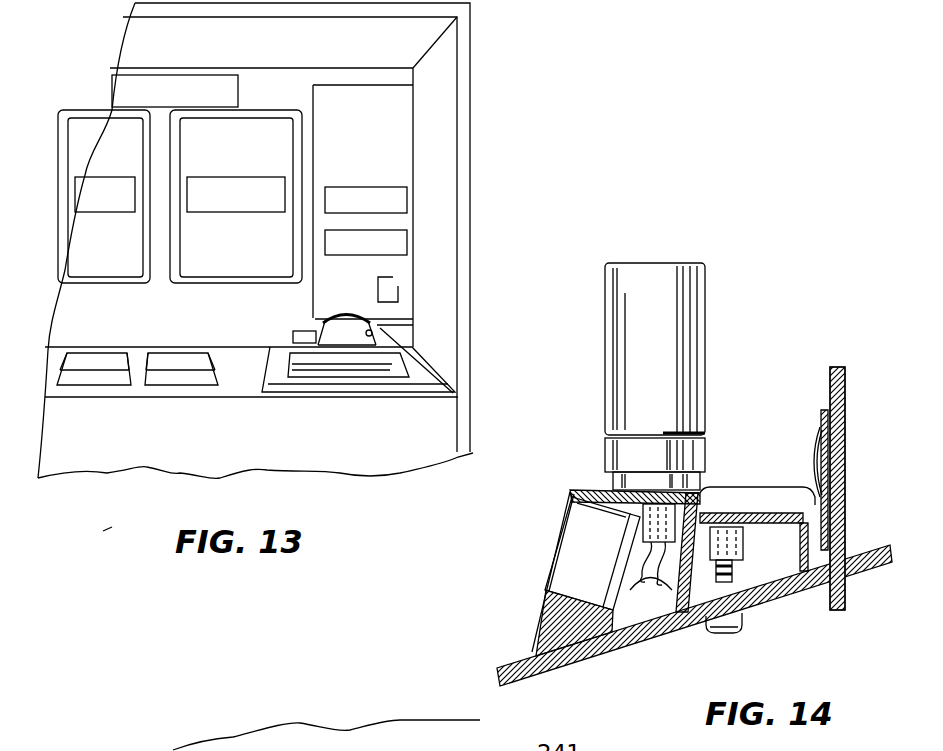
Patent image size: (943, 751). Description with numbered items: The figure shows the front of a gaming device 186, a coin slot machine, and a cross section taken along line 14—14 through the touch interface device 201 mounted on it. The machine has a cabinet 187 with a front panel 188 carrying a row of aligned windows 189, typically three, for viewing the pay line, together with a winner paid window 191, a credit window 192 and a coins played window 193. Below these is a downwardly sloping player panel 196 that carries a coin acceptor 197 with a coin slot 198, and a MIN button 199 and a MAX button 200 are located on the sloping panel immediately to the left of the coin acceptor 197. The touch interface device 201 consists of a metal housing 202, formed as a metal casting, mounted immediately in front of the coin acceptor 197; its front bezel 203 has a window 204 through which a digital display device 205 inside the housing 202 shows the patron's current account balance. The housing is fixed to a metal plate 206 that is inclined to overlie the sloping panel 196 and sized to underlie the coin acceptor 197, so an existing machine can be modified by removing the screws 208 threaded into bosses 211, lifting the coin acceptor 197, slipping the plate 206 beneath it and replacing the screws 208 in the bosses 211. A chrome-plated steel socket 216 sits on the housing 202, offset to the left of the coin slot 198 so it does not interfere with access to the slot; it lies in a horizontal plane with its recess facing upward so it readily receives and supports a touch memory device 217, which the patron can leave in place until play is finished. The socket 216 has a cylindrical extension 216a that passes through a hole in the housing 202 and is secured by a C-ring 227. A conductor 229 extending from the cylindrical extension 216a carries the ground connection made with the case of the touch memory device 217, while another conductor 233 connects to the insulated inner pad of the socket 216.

In FIG. 13, the section line 14 is at (355, 303).
In FIG. 13, the gaming device 186 is at (494, 104).
In FIG. 13, the cabinet 187 is at (473, 72).
In FIG. 14, the cabinet 187 is at (830, 377).
In FIG. 13, the front panel 188 is at (262, 80).
In FIG. 13, the aligned windows 189 is at (103, 183).
In FIG. 13, the winner paid window 191 is at (362, 195).
In FIG. 13, the credit window 192 is at (405, 240).
In FIG. 13, the coins played window 193 is at (397, 284).
In FIG. 13, the downwardly sloping player panel 196 is at (62, 395).
In FIG. 14, the downwardly sloping player panel 196 is at (610, 650).
In FIG. 13, the coin acceptor 197 is at (413, 320).
In FIG. 14, the coin acceptor 197 is at (824, 412).
In FIG. 13, the slot 198 is at (385, 330).
In FIG. 14, the slot 198 is at (817, 440).
In FIG. 13, the MIN button 199 is at (93, 363).
In FIG. 13, the MAX button 200 is at (178, 363).
In FIG. 13, the touch interface device 201 is at (263, 358).
In FIG. 14, the metal housing 202 is at (541, 629).
In FIG. 13, the front bezel 203 is at (398, 376).
In FIG. 14, the front bezel 203 is at (558, 597).
In FIG. 13, the window 204 is at (293, 370).
In FIG. 14, the window 204 is at (561, 545).
In FIG. 14, the digital display device 205 is at (584, 537).
In FIG. 13, the metal plate 206 is at (455, 392).
In FIG. 14, the metal plate 206 is at (553, 672).
In FIG. 14, the screws 208 is at (745, 625).
In FIG. 14, the bosses 211 is at (758, 515).
In FIG. 13, the socket 216 is at (296, 335).
In FIG. 14, the socket 216 is at (704, 448).
In FIG. 14, the cylindrical extension 216a is at (571, 496).
In FIG. 14, the touch memory device 217 is at (707, 332).
In FIG. 14, the C-ring 227 is at (608, 488).
In FIG. 14, the conductor 229 is at (650, 628).
In FIG. 14, the conductor 233 is at (672, 628).